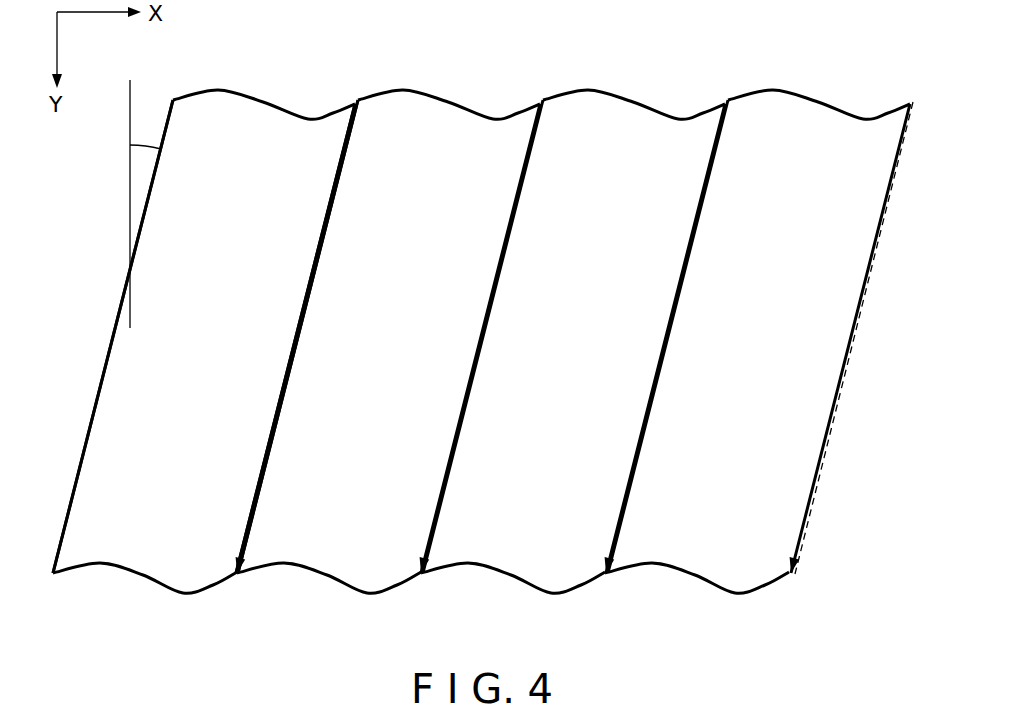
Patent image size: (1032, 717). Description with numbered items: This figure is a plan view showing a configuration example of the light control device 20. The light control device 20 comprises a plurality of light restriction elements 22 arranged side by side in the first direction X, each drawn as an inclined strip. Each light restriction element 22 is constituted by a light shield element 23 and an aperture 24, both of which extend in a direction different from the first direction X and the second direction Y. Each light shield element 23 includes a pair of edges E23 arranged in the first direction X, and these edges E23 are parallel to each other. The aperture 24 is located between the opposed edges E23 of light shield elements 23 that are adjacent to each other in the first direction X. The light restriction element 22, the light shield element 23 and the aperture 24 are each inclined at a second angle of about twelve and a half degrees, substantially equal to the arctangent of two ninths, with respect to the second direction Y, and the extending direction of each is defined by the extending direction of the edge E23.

The light control device 20 is at (880, 64).
The light restriction element 22 is at (355, 97).
The light shield element 23 is at (109, 557).
The aperture 24 is at (237, 576).
The edge E23 is at (100, 386).